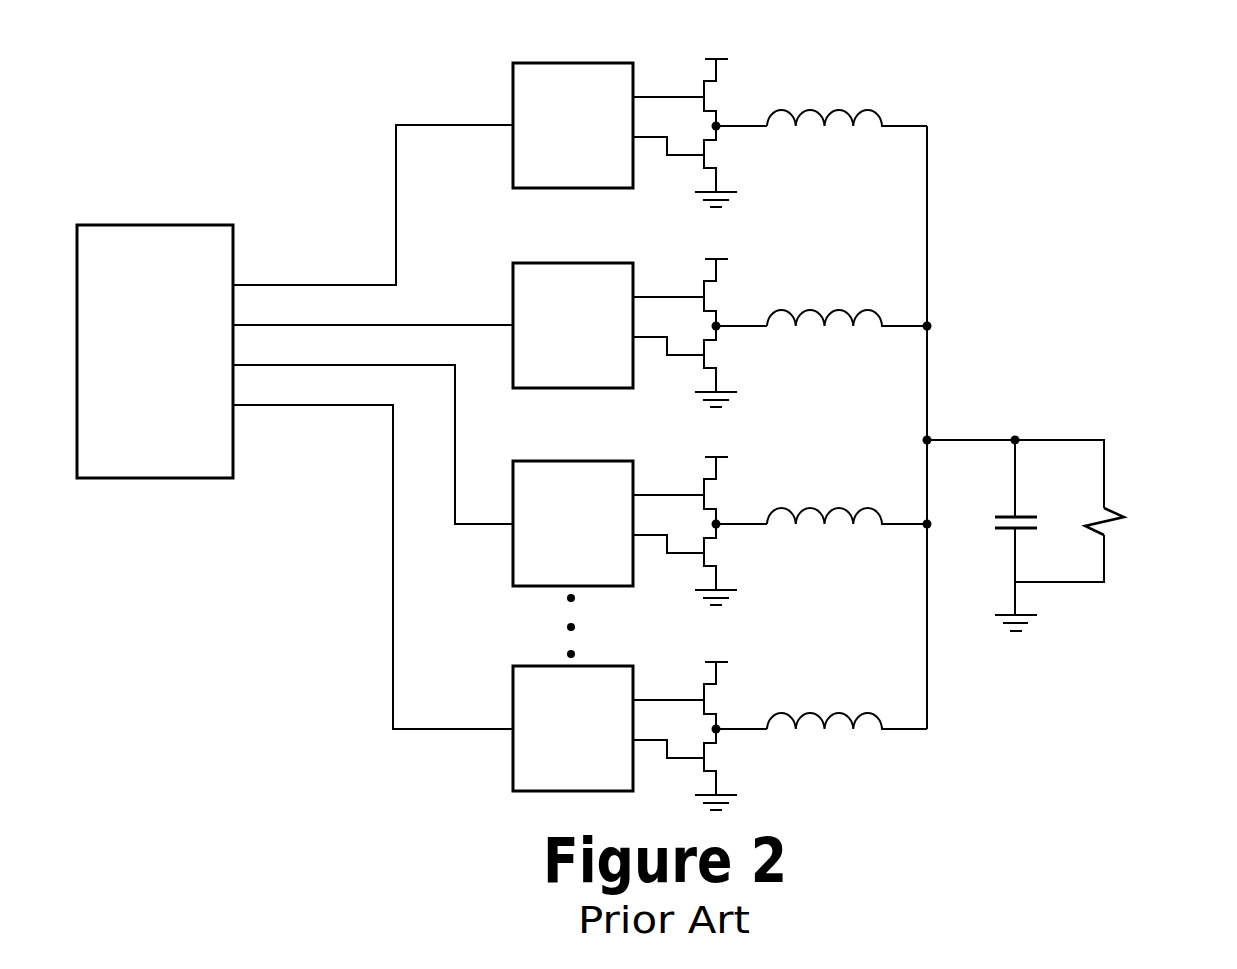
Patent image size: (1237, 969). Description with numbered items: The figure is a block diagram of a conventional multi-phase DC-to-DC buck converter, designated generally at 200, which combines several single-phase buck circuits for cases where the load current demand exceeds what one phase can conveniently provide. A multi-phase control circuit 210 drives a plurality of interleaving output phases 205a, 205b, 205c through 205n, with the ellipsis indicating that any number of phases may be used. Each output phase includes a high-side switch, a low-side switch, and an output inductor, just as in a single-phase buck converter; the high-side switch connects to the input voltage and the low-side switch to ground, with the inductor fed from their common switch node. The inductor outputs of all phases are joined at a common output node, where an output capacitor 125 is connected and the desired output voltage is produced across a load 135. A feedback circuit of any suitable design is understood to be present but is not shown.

The multi-phase buck converter 200 is at (322, 734).
The multi-phase control circuit 210 is at (155, 351).
The output phase 205a is at (720, 114).
The output phase 205b is at (720, 314).
The output phase 205c is at (720, 512).
The output phase 205n is at (720, 717).
The output capacitor 125 is at (1007, 512).
The load 135 is at (1150, 500).